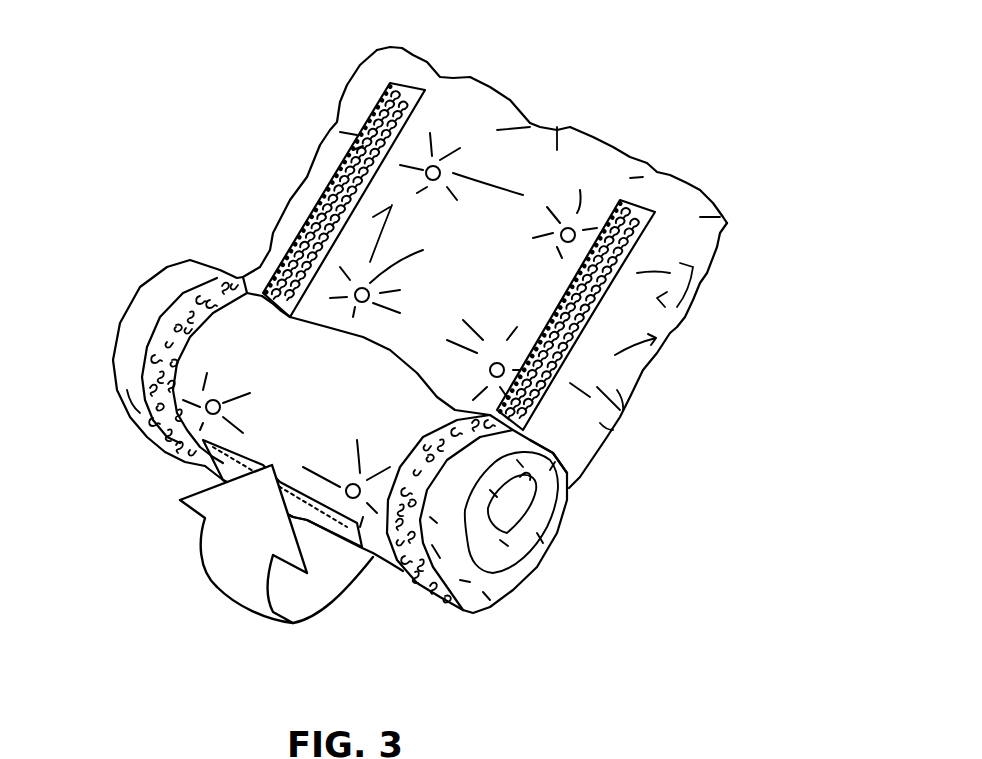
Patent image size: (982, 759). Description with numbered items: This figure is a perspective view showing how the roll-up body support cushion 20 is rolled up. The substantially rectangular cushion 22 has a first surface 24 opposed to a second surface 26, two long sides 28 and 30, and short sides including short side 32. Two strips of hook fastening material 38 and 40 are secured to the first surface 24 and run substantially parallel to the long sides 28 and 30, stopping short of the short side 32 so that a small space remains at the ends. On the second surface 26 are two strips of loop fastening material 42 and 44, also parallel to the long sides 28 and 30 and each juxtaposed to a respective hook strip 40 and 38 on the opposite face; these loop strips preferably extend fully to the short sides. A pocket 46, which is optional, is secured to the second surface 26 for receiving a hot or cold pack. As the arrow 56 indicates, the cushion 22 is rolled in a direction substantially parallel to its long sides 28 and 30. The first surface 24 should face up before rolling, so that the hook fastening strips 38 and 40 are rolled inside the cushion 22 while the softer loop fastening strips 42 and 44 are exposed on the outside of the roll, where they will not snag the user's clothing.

The roll-up body support cushion 20 is at (743, 58).
The cushion 22 is at (708, 284).
The first surface 24 is at (623, 333).
The second surface 26 is at (157, 295).
The long side 28 is at (603, 447).
The long side 30 is at (288, 207).
The short side 32 is at (557, 150).
The strip of hook fastening material 38 is at (637, 200).
The strip of hook fastening material 40 is at (402, 80).
The strip of loop fastening material 42 is at (150, 428).
The strip of loop fastening material 44 is at (410, 567).
The pocket 46 is at (216, 461).
The arrow 56 is at (233, 565).